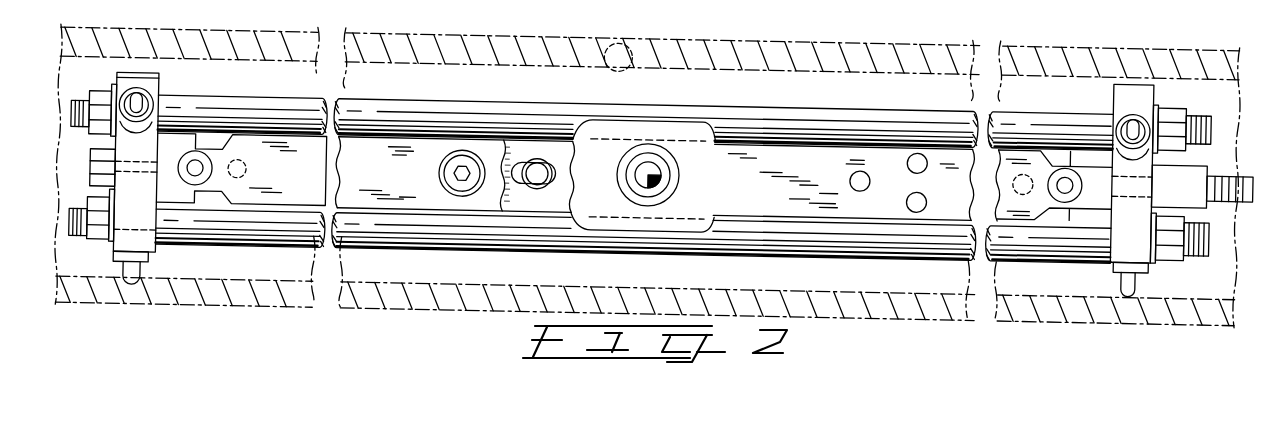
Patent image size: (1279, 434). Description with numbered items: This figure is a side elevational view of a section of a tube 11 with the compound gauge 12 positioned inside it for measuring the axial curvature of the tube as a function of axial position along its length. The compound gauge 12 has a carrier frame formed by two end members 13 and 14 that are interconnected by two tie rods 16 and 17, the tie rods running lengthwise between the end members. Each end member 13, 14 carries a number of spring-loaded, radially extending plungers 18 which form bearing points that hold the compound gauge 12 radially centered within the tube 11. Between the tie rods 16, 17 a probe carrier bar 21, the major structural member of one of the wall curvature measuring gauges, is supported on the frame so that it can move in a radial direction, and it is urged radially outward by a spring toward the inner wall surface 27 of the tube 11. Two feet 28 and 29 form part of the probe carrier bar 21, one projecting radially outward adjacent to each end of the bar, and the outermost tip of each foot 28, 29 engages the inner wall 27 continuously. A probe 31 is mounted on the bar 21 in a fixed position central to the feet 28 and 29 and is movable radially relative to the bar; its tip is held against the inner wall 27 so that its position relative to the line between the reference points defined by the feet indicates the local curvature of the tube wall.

The tube 11 is at (773, 53).
The compound gauge 12 is at (1212, 95).
The end member 13 is at (158, 242).
The end member 14 is at (1150, 83).
The tie rod 16 is at (402, 115).
The tie rod 17 is at (455, 241).
The spring-loaded radially extending plunger 18 is at (140, 108).
The probe carrier bar 21 is at (672, 127).
The inner wall surface 27 is at (615, 44).
The foot 28 is at (193, 181).
The foot 29 is at (1057, 181).
The probe 31 is at (640, 174).